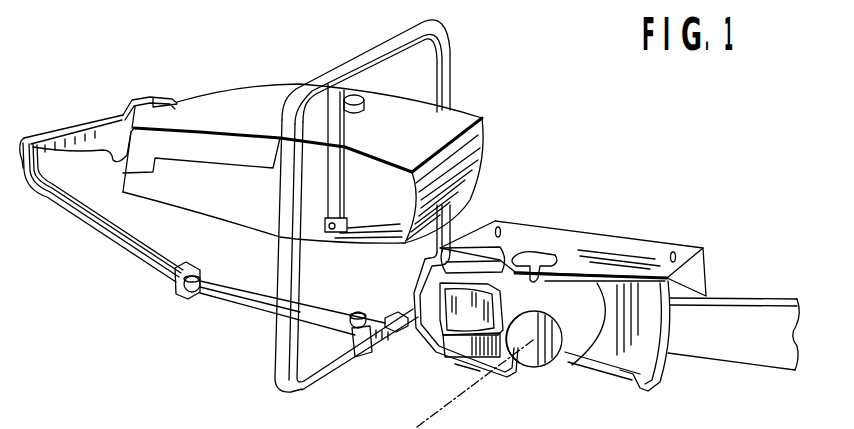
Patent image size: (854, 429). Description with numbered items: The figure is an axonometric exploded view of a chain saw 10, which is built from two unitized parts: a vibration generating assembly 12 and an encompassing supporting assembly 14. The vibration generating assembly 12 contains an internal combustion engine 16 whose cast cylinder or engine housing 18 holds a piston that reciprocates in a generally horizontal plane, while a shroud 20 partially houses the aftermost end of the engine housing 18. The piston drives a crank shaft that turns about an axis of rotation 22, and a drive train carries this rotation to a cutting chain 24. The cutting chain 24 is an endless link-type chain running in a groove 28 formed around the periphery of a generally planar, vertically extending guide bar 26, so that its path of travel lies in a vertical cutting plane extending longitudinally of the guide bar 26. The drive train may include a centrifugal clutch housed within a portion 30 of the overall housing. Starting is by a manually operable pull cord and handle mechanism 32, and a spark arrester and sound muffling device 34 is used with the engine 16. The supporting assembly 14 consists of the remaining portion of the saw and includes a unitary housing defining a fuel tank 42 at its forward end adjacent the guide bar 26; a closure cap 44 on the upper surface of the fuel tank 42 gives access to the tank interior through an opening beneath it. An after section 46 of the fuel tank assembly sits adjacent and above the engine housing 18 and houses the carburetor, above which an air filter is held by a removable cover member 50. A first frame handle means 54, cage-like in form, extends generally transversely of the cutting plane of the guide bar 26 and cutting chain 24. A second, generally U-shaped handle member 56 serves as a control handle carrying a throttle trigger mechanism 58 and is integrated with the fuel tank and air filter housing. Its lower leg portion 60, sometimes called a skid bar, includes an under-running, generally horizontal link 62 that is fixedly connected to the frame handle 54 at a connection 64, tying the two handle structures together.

The chain saw 10 is at (503, 85).
The vibration generating assembly 12 is at (642, 222).
The supporting assembly 14 is at (298, 68).
The internal combustion engine 16 is at (443, 343).
The engine housing 18 is at (620, 220).
The shroud 20 is at (433, 310).
The axis of rotation 22 is at (440, 418).
The cutting chain 24 is at (728, 298).
The guide bar 26 is at (780, 333).
The groove 28 is at (787, 299).
The housing portion 30 is at (555, 360).
The pull cord and handle mechanism 32 is at (555, 262).
The spark arrester and sound muffling device 34 is at (470, 366).
The fuel tank 42 is at (480, 137).
The closure cap 44 is at (364, 106).
The after section 46 is at (177, 197).
The removable cover member 50 is at (230, 100).
The first frame handle means 54 is at (447, 44).
The second U-shaped handle member 56 is at (42, 107).
The throttle trigger mechanism 58 is at (115, 163).
The lower leg portion 60 is at (107, 248).
The horizontal link 62 is at (237, 300).
The connection 64 is at (353, 357).